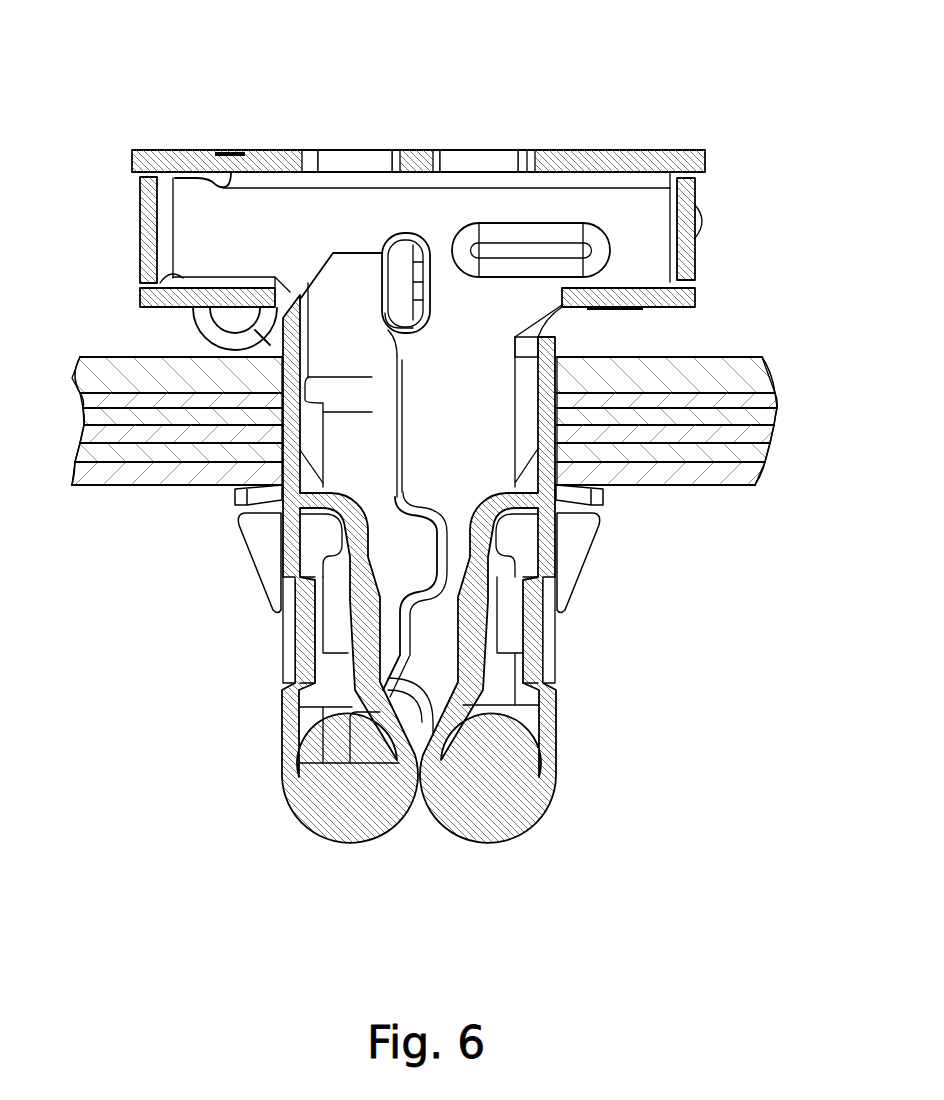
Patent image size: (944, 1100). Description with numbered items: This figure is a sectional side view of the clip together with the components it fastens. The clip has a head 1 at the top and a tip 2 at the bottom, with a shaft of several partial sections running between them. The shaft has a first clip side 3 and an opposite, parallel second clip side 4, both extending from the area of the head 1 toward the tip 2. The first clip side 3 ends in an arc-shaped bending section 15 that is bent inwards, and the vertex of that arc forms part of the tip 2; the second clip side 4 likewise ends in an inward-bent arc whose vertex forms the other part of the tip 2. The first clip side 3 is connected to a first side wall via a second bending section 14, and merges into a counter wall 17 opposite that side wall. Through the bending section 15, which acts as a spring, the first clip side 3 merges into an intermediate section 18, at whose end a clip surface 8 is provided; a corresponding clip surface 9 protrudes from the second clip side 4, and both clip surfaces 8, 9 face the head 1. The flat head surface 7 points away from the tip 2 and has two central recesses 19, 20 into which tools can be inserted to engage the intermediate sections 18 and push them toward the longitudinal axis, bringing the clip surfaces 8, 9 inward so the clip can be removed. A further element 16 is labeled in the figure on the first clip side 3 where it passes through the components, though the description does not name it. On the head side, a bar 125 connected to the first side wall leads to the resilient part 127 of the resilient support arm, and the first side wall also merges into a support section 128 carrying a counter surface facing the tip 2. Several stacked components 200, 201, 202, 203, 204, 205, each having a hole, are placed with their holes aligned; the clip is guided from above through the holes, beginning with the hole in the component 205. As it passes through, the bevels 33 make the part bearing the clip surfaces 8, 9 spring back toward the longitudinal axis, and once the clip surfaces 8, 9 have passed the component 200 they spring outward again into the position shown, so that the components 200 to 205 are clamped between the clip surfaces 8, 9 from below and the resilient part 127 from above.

The head 1 is at (637, 127).
The tip 2 is at (435, 878).
The first clip side 3 is at (178, 582).
The second clip side 4 is at (624, 635).
The head surface 7 is at (595, 155).
The clip surface 8 is at (240, 492).
The clip surface 9 is at (600, 492).
The second bending section 14 is at (525, 697).
The bending section 15 is at (330, 835).
The contact pin 16 is at (300, 421).
The counter wall 17 is at (397, 550).
The intermediate section 18 is at (368, 635).
The recess 19 is at (345, 155).
The recess 20 is at (483, 155).
The bevel 33 is at (255, 538).
The bar 125 is at (690, 245).
The resilient part 127 is at (205, 322).
The support section 128 is at (692, 300).
The component 200 is at (750, 475).
The component 201 is at (753, 452).
The component 202 is at (755, 435).
The component 203 is at (755, 418).
The component 204 is at (757, 400).
The component 205 is at (750, 372).